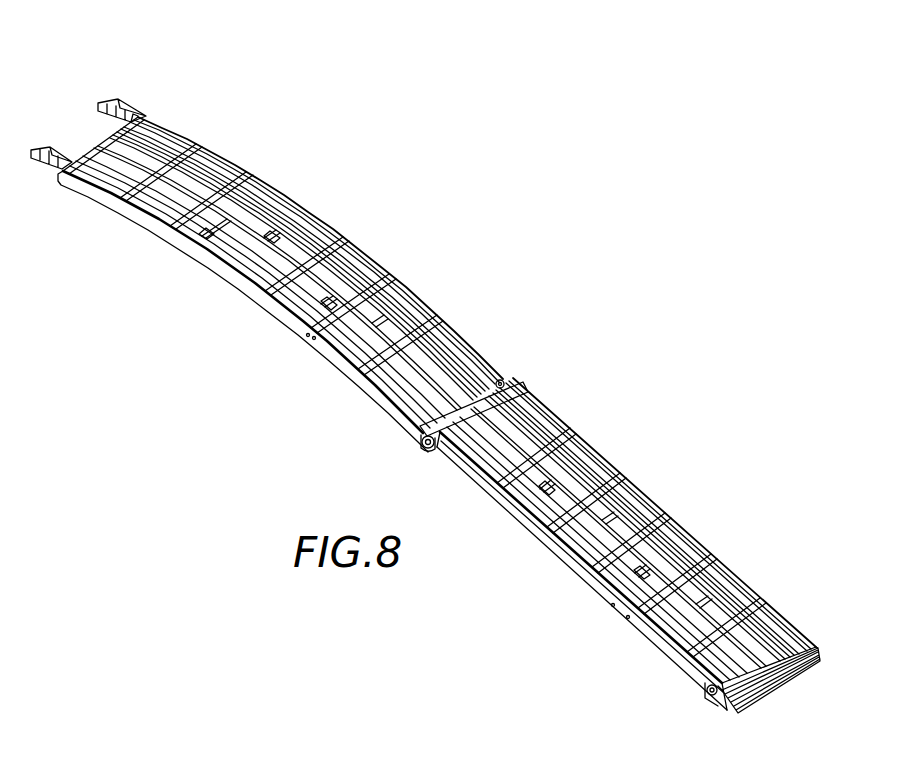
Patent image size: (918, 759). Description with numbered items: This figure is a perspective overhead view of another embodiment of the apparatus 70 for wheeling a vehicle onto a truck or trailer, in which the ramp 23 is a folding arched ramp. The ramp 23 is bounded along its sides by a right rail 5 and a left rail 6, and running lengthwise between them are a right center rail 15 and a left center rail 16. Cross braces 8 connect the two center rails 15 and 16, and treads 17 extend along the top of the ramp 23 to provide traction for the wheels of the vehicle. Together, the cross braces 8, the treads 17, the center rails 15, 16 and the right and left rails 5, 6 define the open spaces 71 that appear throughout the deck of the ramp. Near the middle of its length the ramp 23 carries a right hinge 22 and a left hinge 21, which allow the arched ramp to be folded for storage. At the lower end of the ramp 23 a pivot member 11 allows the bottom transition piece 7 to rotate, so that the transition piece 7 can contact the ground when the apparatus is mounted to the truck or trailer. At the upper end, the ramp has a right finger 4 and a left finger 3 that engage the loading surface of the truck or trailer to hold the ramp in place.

The apparatus 70 is at (585, 276).
The open spaces 71 is at (186, 188).
The left finger 3 is at (50, 150).
The right finger 4 is at (116, 100).
The left center rail 16 is at (291, 296).
The cross braces 8 is at (203, 241).
The right center rail 15 is at (330, 262).
The treads 17 is at (419, 312).
The left hinge 21 is at (420, 441).
The right hinge 22 is at (502, 378).
The right rail 5 is at (637, 478).
The left rail 6 is at (604, 598).
The ramp 23 is at (497, 500).
The transition piece 7 is at (810, 645).
The pivot member 11 is at (705, 695).